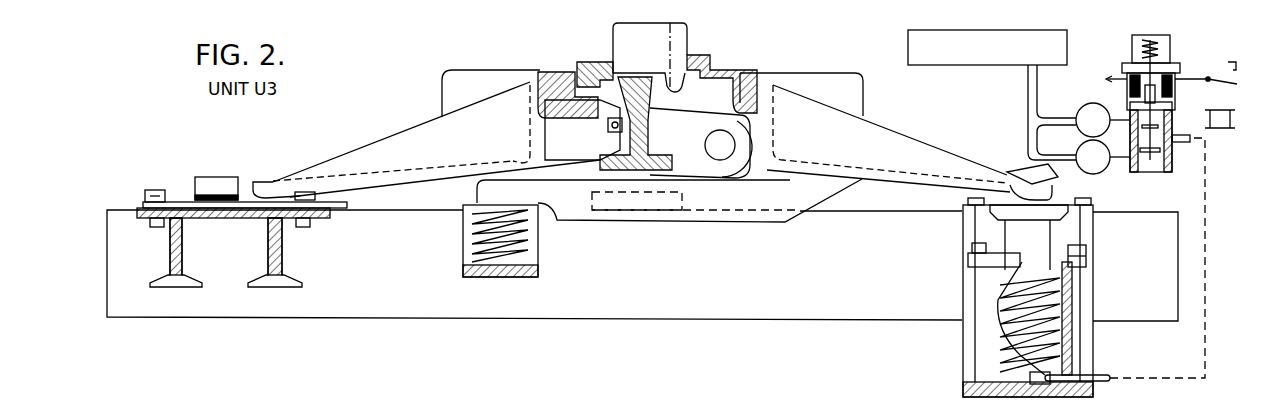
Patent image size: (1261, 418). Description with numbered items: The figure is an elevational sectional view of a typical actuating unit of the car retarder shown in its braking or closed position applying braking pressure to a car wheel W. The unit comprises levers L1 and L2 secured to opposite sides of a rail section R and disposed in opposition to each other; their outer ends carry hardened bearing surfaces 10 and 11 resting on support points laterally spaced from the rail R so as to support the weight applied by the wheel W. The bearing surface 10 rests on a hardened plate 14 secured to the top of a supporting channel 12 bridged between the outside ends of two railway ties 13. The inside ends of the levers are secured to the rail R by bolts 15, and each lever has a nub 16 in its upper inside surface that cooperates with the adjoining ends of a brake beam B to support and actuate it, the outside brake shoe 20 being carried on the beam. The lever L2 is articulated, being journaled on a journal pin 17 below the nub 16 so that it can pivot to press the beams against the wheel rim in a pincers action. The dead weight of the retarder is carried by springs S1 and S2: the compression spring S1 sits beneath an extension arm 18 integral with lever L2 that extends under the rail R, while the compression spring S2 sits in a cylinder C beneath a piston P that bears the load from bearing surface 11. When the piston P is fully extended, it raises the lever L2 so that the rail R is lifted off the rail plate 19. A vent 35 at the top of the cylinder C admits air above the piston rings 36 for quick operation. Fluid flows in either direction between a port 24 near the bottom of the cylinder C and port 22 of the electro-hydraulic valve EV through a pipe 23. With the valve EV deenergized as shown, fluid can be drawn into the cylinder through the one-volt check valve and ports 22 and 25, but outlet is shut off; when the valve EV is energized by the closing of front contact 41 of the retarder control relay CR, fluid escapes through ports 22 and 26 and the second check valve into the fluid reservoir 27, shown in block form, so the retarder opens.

The hardened bearing surface 10 is at (274, 187).
The hardened bearing surface 11 is at (1027, 175).
The supporting channel 12 is at (183, 246).
The railway ties 13 is at (117, 232).
The hardened plate 14 is at (178, 200).
The bolts 15 is at (608, 126).
The nub 16 is at (565, 85).
The journal pin 17 is at (712, 140).
The extension arm 18 is at (478, 190).
The rail plate 19 is at (592, 203).
The outside brake shoe 20 is at (611, 62).
The valve port 22 is at (1166, 150).
The pipe 23 is at (1100, 381).
The cylinder port 24 is at (1043, 384).
The valve port 25 is at (1145, 166).
The valve port 26 is at (1122, 117).
The fluid reservoir 27 is at (988, 66).
The vent 35 is at (1062, 262).
The piston rings 36 is at (1075, 275).
The front contact 41 is at (1212, 68).
The brake beam B is at (462, 72).
The cylinder C is at (1070, 301).
The retarder control relay CR is at (1220, 109).
The electro-hydraulic valve EV is at (1170, 58).
The lever L1 is at (393, 140).
The lever L2 is at (882, 145).
The piston P is at (1040, 236).
The rail section R is at (585, 63).
The compression spring S1 is at (538, 250).
The compression spring S2 is at (1060, 330).
The car wheel W is at (688, 48).